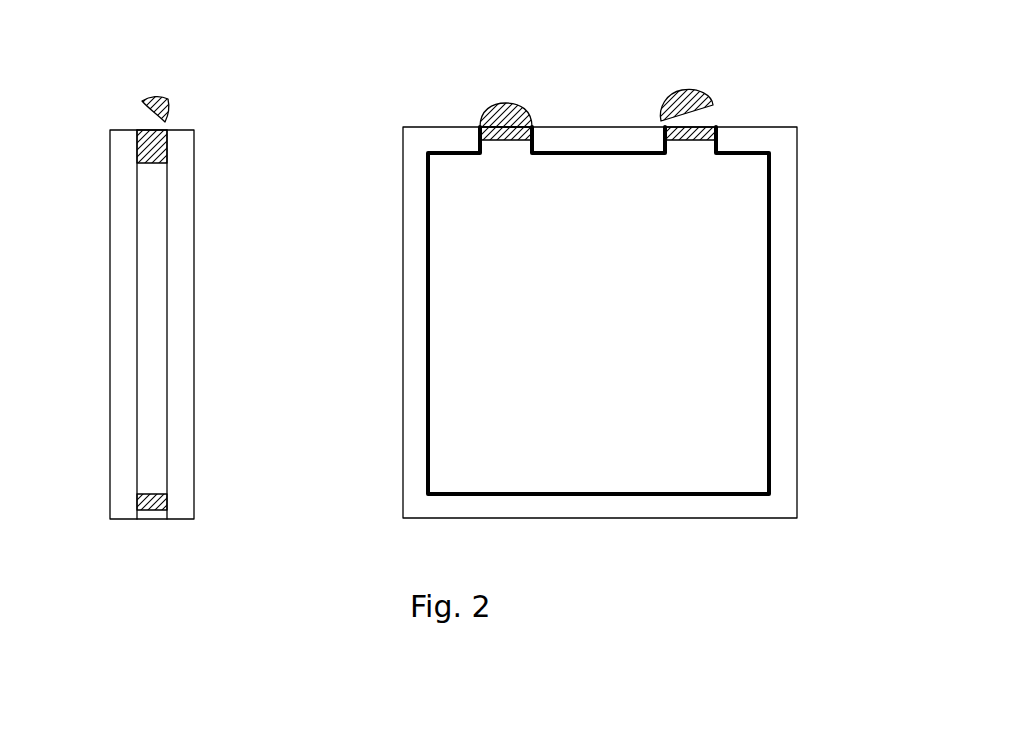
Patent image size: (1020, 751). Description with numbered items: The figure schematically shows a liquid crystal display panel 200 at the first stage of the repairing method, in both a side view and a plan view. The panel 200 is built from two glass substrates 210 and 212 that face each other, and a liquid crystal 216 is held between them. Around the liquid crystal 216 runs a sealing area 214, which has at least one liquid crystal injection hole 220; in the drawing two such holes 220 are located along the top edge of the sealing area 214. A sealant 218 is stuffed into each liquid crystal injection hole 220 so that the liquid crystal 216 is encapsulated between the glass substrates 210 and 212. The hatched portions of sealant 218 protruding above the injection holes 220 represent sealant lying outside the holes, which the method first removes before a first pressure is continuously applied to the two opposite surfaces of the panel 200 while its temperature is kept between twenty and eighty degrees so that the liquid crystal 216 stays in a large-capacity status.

The liquid crystal display panel 200 is at (824, 76).
The glass substrate 210 is at (108, 462).
The glass substrate 212 is at (196, 462).
The sealing area 214 is at (147, 511).
The liquid crystal 216 is at (157, 256).
The sealant 218 is at (165, 100).
The liquid crystal injection hole 220 is at (480, 146).